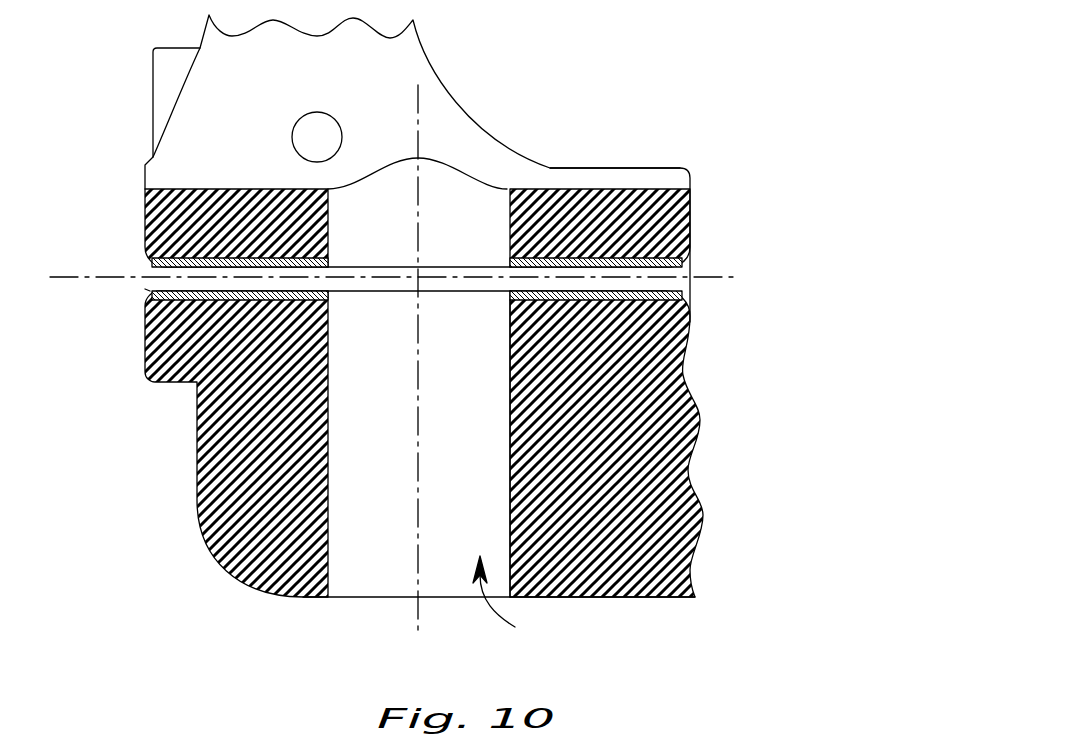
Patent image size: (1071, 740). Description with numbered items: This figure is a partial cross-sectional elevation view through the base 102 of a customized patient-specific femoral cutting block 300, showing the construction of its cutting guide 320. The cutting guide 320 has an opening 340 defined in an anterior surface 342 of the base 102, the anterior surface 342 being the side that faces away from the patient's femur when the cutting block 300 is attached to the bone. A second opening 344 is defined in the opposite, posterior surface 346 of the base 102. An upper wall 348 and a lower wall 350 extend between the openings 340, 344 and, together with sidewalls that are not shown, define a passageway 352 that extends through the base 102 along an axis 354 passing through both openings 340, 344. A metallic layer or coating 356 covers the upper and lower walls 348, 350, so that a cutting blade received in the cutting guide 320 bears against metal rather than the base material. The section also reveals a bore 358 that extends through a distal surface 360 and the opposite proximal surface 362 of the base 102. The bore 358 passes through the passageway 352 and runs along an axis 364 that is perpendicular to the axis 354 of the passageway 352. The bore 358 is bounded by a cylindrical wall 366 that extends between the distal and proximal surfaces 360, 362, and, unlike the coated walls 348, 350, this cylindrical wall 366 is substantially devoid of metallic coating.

The base 102 is at (415, 62).
The femoral cutting block 300 is at (792, 82).
The cutting guide 320 is at (768, 251).
The opening 340 is at (145, 248).
The anterior surface 342 is at (145, 360).
The opening 344 is at (690, 318).
The posterior surface 346 is at (692, 200).
The upper wall 348 is at (326, 244).
The lower wall 350 is at (508, 298).
The passageway 352 is at (150, 291).
The axis 354 is at (70, 277).
The metallic layer or coating 356 is at (213, 262).
The bore 358 is at (514, 603).
The distal surface 360 is at (613, 597).
The proximal surface 362 is at (527, 189).
The axis 364 is at (418, 118).
The cylindrical wall 366 is at (508, 412).